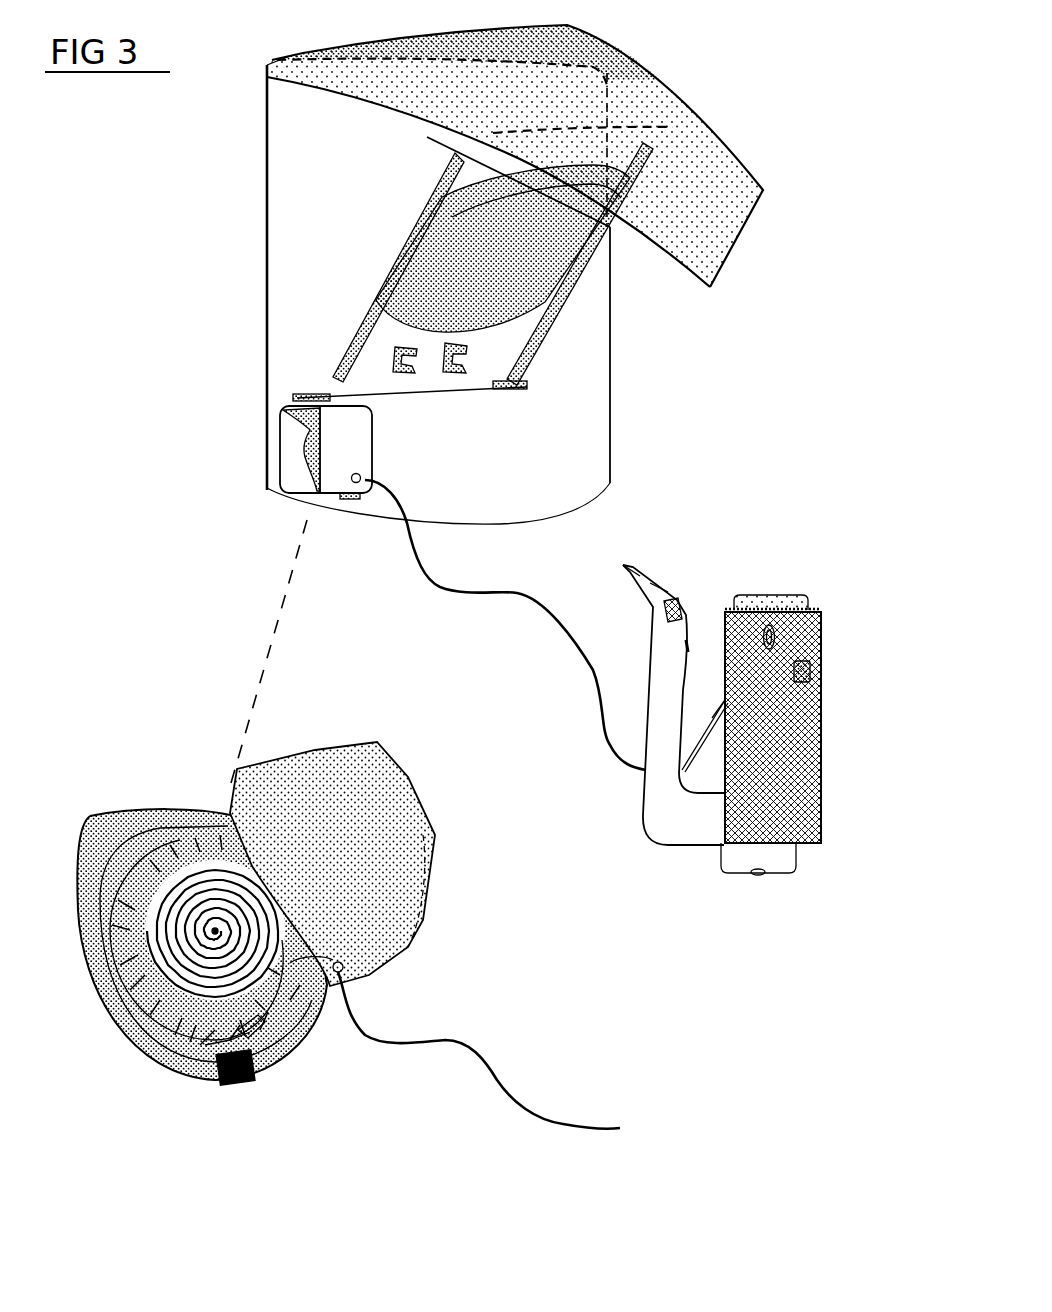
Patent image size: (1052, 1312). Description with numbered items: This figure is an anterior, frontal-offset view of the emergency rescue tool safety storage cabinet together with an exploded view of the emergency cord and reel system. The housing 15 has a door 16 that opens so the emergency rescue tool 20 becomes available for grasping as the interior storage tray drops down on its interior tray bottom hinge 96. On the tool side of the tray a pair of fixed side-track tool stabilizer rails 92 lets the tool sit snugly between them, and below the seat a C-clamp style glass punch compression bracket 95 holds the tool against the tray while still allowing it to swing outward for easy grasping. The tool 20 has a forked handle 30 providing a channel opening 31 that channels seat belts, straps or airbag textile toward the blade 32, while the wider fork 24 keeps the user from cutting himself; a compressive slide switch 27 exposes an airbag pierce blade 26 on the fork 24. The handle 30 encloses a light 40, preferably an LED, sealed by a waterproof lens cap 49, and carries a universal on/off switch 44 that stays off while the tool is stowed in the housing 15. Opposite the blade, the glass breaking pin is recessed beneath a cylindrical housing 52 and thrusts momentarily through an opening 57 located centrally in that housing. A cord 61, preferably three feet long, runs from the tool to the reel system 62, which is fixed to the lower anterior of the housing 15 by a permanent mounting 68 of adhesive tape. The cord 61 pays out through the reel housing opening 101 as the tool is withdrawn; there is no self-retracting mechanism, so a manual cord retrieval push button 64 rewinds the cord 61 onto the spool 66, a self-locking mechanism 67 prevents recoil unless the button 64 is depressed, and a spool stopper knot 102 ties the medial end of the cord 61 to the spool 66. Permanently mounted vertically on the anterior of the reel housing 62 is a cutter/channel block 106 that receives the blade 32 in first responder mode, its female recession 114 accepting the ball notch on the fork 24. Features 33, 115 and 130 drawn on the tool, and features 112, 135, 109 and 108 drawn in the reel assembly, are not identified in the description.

The housing 15 is at (216, 159).
The door 16 is at (722, 280).
The side-track tool stabilizer rails 92 is at (362, 360).
The glass punch compression bracket 95 is at (456, 339).
The interior tray bottom hinge 96 is at (286, 403).
The female recession 114 is at (296, 432).
The reel system 62 is at (283, 480).
The cutter/channel block 106 is at (307, 482).
The reel housing opening 101 is at (362, 468).
The manual cord retrieval push button 64 is at (343, 501).
The cord 61 is at (438, 589).
The emergency rescue tool 20 is at (703, 520).
The fork 24 is at (652, 654).
The airbag pierce/puncture blade 26 is at (628, 565).
The notch 33 is at (667, 584).
The compressive slide switch 27 is at (681, 600).
The strap 115 is at (689, 646).
The channel opening 31 is at (714, 686).
The handle 30 is at (828, 745).
The light 40 is at (777, 594).
The waterproof lens cap 49 is at (754, 603).
The universal on/off switch 44 is at (777, 630).
The switch 130 is at (814, 670).
The blade 32 is at (716, 724).
The cylindrical housing 52 is at (718, 866).
The opening 57 is at (756, 876).
The permanent mounting 68 is at (134, 1058).
The spool 66 is at (103, 945).
The ribs 112 is at (107, 932).
The coil 135 is at (233, 917).
The center post 109 is at (210, 926).
The spool stopper knot 102 is at (237, 917).
The self-locking mechanism 67 is at (214, 1052).
The slot 108 is at (250, 1030).